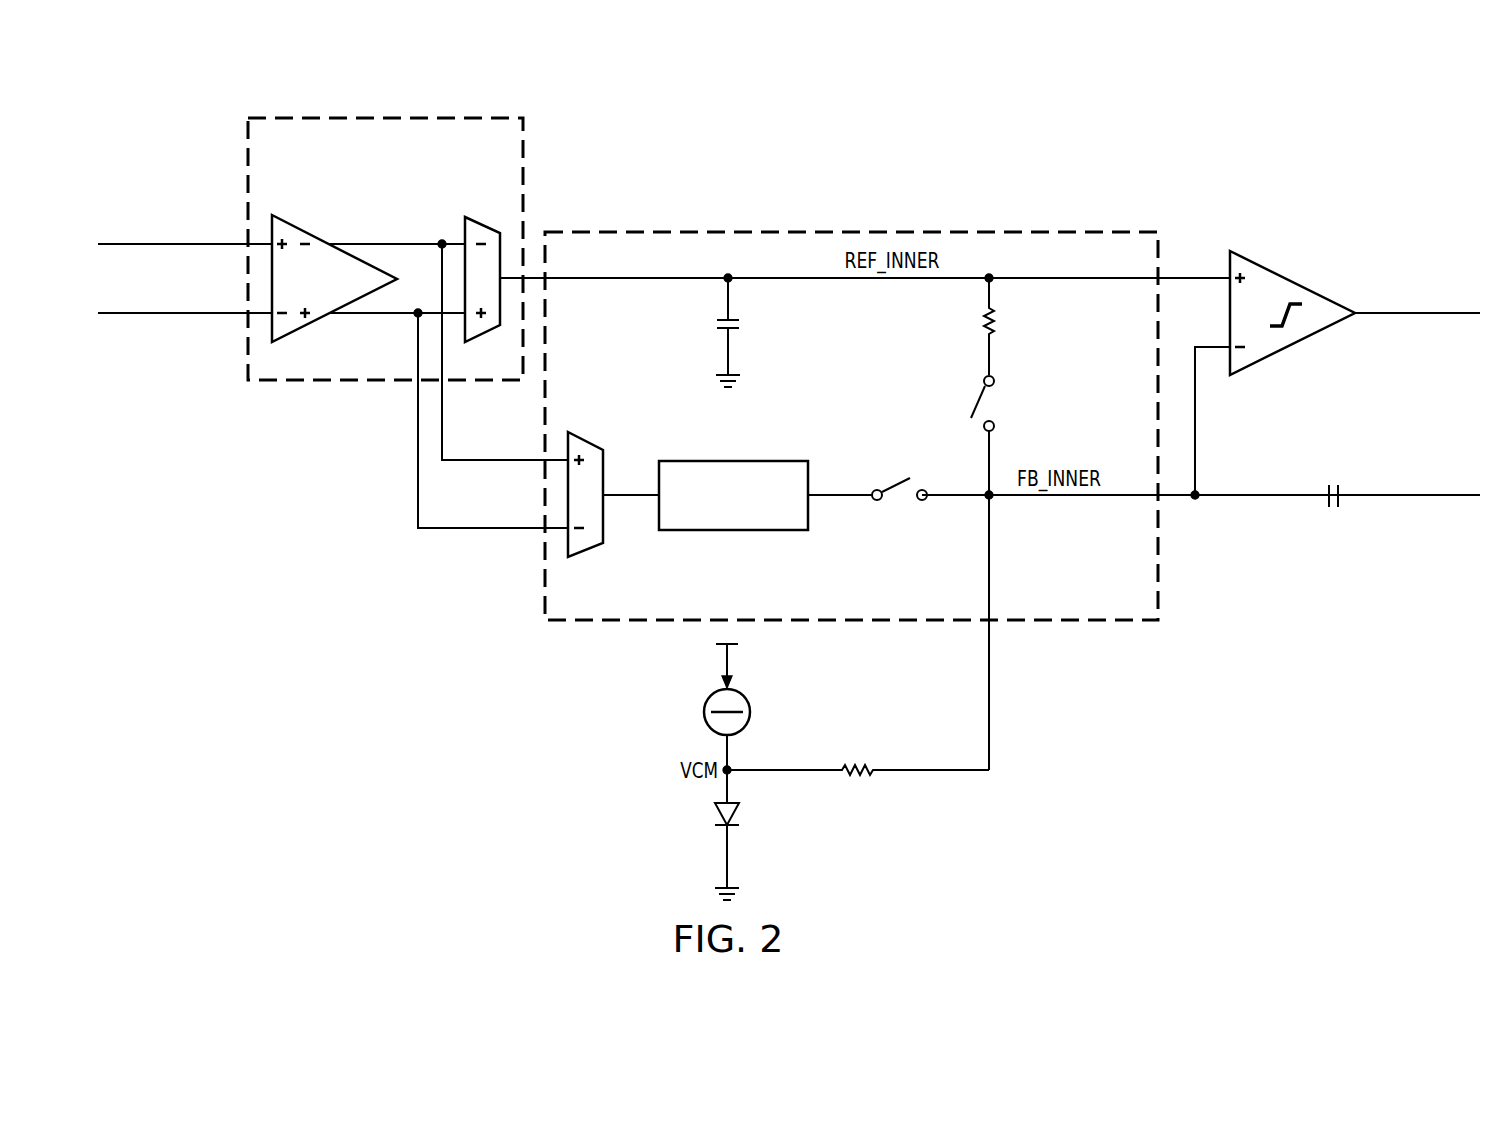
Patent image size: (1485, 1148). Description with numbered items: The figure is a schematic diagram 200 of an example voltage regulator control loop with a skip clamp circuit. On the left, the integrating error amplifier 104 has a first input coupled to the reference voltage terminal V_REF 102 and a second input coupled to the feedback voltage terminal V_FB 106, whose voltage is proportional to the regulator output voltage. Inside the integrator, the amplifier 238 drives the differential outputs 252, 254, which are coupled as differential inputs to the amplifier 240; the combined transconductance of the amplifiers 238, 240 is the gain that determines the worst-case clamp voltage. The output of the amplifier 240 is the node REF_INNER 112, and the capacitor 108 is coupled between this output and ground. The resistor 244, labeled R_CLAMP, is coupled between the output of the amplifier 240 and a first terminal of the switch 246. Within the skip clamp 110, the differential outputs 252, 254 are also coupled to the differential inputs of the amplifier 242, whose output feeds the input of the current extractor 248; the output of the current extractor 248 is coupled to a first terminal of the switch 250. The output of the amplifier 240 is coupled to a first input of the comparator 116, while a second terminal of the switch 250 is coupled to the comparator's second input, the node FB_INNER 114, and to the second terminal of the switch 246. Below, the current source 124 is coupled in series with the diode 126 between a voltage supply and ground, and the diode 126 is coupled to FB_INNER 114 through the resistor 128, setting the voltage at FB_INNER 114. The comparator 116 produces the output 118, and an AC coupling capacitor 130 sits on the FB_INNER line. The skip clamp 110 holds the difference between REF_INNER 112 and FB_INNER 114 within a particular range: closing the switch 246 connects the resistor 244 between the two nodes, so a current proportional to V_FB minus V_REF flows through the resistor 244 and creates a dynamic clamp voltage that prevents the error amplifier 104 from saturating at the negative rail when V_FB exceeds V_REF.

The reference voltage terminal 102 is at (147, 242).
The integrating error amplifier 104 is at (304, 118).
The feedback voltage terminal 106 is at (147, 310).
The capacitor 108 is at (712, 322).
The skip clamp 110 is at (713, 232).
The REF_INNER 112 is at (1182, 274).
The FB_INNER 114 is at (1060, 500).
The comparator 116 is at (1289, 275).
The comparator output 118 is at (1410, 310).
The current source 124 is at (704, 722).
The diode 126 is at (718, 812).
The resistor 128 is at (858, 780).
The AC coupling capacitor 130 is at (1334, 508).
The schematic diagram 200 is at (1058, 120).
The amplifier 238 is at (334, 292).
The amplifier 240 is at (470, 217).
The amplifier 242 is at (598, 548).
The resistor 244 is at (981, 321).
The switch 246 is at (980, 395).
The current extractor 248 is at (721, 532).
The switch 250 is at (895, 482).
The differential output 252 is at (372, 242).
The differential output 254 is at (372, 313).